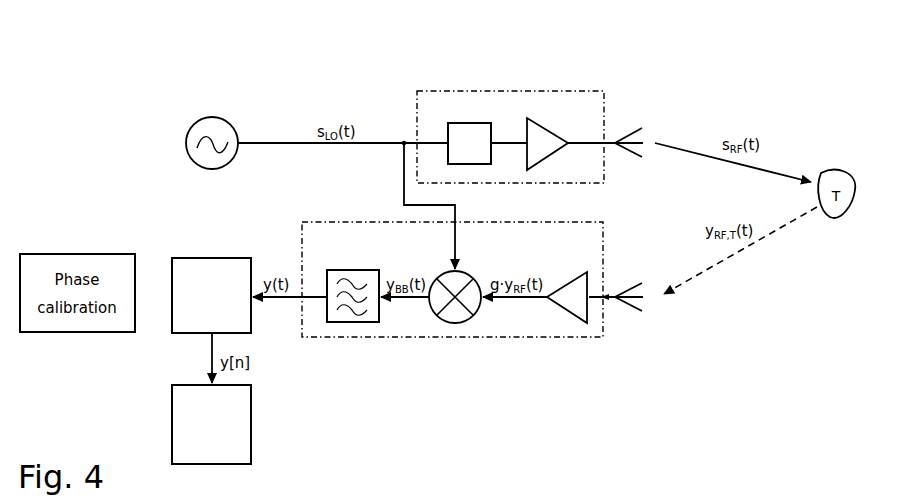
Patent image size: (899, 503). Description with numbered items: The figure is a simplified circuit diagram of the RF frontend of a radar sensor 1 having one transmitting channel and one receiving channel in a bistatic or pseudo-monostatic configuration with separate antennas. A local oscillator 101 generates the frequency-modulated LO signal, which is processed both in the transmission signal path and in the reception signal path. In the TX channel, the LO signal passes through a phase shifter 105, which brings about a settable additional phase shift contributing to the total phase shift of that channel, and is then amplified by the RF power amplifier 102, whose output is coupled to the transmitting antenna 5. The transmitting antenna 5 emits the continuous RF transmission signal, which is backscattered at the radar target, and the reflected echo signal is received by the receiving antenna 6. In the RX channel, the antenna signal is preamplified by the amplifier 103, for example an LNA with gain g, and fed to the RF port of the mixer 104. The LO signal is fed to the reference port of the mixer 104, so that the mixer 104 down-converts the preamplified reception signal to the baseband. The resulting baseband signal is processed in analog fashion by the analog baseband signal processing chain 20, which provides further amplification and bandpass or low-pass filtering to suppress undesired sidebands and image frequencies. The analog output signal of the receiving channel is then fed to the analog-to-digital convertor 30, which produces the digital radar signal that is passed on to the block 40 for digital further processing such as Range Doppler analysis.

The radar sensor 1 is at (384, 53).
The local oscillator 101 is at (219, 118).
The phase shifter 105 is at (491, 128).
The RF power amplifier 102 is at (552, 132).
The transmitting antenna 5 is at (618, 128).
The receiving antenna 6 is at (618, 284).
The amplifier 103 is at (565, 284).
The mixer 104 is at (477, 280).
The analog baseband signal processing chain 20 is at (351, 268).
The analog-to-digital convertor 30 is at (211, 295).
The digital signal processor 40 is at (211, 424).